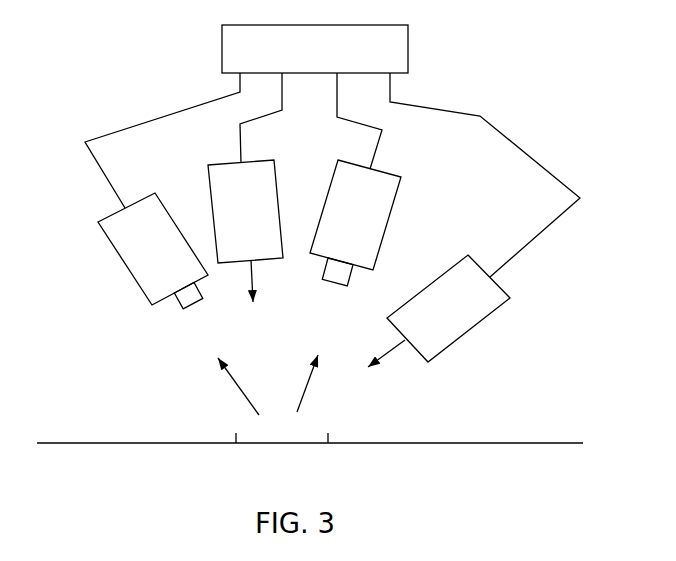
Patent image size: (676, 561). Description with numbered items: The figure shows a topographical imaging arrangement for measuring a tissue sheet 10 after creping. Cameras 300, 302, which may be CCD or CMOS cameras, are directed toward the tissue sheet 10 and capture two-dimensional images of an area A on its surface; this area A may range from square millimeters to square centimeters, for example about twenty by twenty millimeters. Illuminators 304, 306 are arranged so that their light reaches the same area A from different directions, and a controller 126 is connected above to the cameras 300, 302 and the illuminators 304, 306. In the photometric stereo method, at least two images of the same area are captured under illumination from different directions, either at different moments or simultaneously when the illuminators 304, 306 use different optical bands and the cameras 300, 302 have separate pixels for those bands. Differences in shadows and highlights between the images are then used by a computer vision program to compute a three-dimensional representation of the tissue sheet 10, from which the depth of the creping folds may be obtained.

The controller 126 is at (222, 43).
The camera 302 is at (112, 248).
The illuminator 306 is at (262, 161).
The camera 300 is at (400, 175).
The illuminator 304 is at (508, 298).
The tissue sheet 10 is at (490, 442).
The area A is at (307, 443).